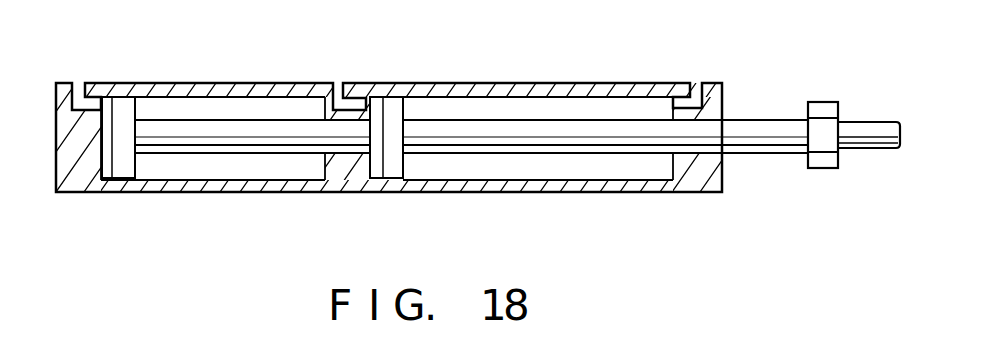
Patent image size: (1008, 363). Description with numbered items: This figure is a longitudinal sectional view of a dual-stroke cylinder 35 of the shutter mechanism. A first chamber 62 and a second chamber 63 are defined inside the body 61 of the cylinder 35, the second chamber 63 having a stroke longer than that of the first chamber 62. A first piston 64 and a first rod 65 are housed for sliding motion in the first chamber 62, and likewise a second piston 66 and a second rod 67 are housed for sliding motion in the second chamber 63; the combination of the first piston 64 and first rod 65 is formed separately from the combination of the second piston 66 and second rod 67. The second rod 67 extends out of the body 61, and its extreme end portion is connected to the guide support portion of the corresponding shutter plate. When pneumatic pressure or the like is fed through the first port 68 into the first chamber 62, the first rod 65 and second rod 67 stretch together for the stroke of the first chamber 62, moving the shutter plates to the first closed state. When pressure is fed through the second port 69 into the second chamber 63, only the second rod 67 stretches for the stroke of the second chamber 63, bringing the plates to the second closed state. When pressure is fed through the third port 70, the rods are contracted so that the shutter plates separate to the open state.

The cylinder 35 is at (438, 70).
The body 61 is at (568, 82).
The first chamber 62 is at (213, 167).
The second chamber 63 is at (541, 164).
The first piston 64 is at (122, 117).
The first rod 65 is at (247, 130).
The second piston 66 is at (392, 108).
The second rod 67 is at (640, 140).
The first port 68 is at (80, 96).
The second port 69 is at (345, 95).
The third port 70 is at (700, 102).